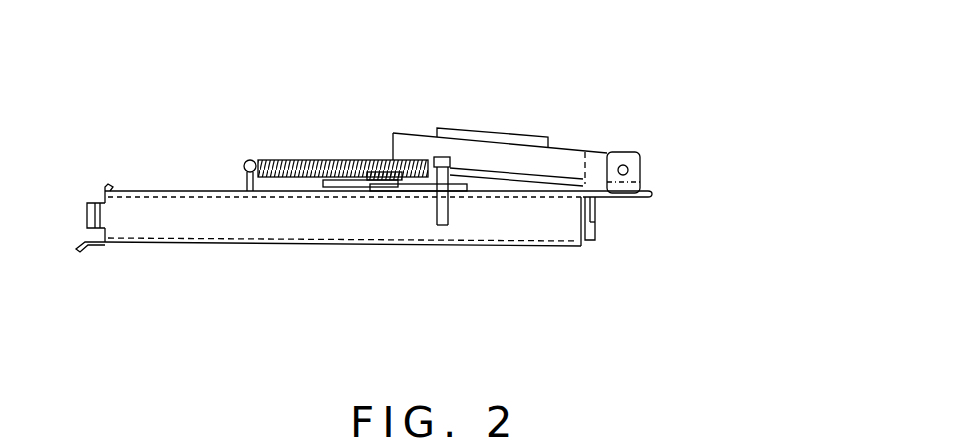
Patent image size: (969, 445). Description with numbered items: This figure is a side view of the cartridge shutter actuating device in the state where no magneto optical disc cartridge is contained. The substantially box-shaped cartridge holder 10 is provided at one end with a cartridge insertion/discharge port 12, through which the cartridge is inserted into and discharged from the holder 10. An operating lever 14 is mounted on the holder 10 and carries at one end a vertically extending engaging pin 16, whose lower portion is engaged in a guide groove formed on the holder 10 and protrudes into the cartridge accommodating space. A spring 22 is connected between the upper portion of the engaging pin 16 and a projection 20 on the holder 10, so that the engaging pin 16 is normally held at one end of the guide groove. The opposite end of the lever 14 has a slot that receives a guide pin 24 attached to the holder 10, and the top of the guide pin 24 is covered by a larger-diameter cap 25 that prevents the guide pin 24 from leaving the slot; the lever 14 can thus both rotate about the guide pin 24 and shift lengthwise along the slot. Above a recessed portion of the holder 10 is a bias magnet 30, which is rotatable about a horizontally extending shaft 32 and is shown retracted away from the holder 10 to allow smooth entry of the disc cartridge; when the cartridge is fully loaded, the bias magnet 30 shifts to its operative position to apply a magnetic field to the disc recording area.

The cartridge holder 10 is at (180, 190).
The cartridge insertion/discharge port 12 is at (77, 198).
The operating lever 14 is at (345, 185).
The engaging pin 16 is at (449, 200).
The projection 20 is at (245, 184).
The spring 22 is at (320, 162).
The guide pin 24 is at (390, 191).
The cap 25 is at (382, 170).
The bias magnet 30 is at (489, 124).
The shaft 32 is at (633, 168).